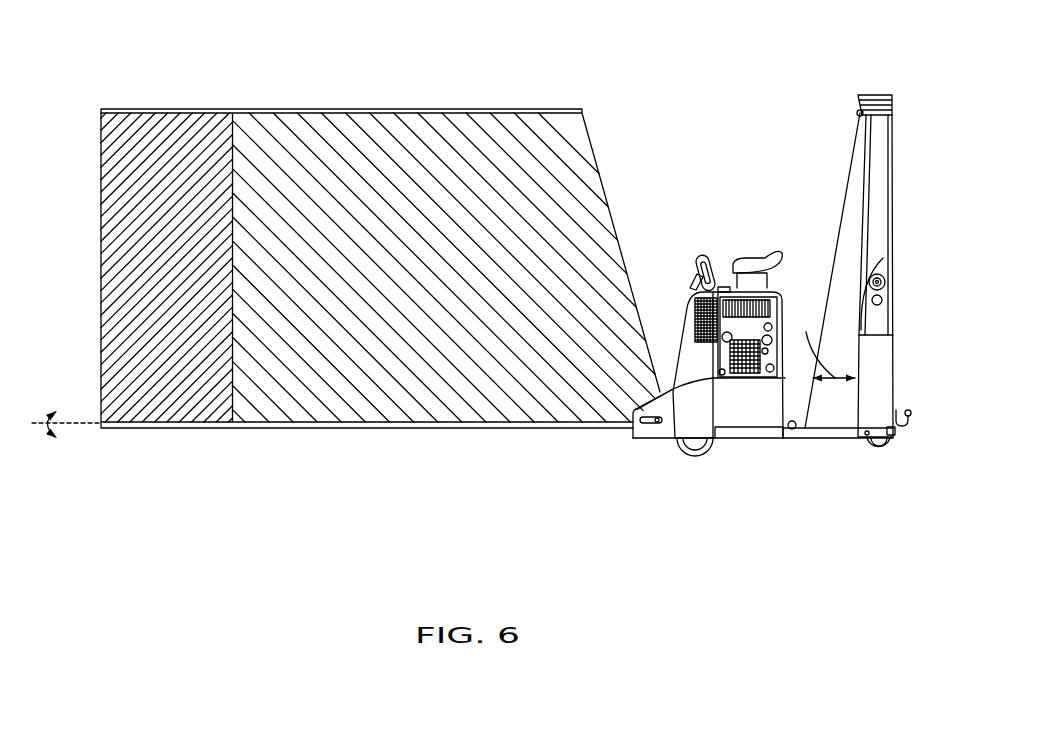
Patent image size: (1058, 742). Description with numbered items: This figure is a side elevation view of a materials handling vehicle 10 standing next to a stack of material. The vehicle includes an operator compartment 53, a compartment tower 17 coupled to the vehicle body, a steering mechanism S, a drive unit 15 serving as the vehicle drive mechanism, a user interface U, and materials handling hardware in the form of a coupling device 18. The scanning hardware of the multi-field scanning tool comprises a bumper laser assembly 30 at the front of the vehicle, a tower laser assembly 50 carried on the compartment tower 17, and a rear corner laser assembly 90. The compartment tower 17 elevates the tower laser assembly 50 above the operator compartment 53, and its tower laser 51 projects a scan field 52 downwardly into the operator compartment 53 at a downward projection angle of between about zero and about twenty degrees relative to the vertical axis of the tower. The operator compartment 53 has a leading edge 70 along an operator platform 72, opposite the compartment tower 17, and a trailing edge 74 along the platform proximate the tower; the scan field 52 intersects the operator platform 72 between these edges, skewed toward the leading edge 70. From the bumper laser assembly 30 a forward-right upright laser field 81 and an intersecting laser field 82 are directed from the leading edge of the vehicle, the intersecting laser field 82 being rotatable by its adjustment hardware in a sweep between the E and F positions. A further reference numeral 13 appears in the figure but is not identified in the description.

The materials handling vehicle 10 is at (706, 212).
The vehicle frame 13 is at (692, 472).
The drive unit 15 is at (708, 445).
The compartment tower 17 is at (893, 155).
The coupling device 18 is at (913, 422).
The bumper laser assembly 30 is at (652, 440).
The tower laser assembly 50 is at (861, 252).
The tower laser 51 is at (857, 110).
The scan field 52 is at (828, 184).
The operator compartment 53 is at (826, 417).
The leading edge 70 is at (783, 432).
The operator platform 72 is at (792, 428).
The trailing edge 74 is at (858, 435).
The forward-right upright laser field 81 is at (457, 110).
The intersecting laser field 82 is at (82, 427).
The rear corner laser assembly 90 is at (893, 438).
The user interface U is at (710, 257).
The steering mechanism S is at (770, 256).